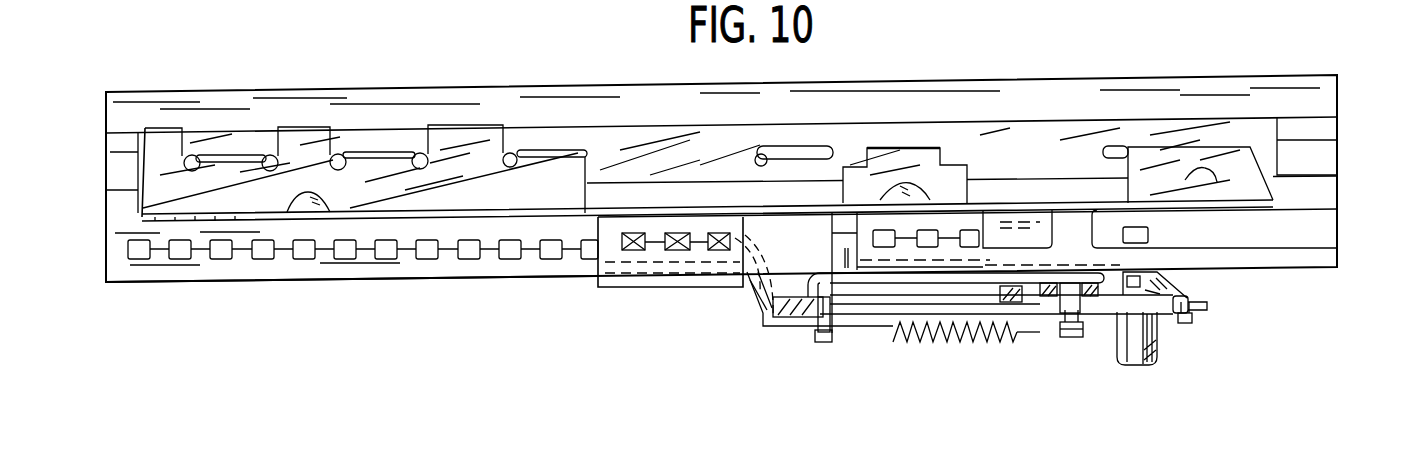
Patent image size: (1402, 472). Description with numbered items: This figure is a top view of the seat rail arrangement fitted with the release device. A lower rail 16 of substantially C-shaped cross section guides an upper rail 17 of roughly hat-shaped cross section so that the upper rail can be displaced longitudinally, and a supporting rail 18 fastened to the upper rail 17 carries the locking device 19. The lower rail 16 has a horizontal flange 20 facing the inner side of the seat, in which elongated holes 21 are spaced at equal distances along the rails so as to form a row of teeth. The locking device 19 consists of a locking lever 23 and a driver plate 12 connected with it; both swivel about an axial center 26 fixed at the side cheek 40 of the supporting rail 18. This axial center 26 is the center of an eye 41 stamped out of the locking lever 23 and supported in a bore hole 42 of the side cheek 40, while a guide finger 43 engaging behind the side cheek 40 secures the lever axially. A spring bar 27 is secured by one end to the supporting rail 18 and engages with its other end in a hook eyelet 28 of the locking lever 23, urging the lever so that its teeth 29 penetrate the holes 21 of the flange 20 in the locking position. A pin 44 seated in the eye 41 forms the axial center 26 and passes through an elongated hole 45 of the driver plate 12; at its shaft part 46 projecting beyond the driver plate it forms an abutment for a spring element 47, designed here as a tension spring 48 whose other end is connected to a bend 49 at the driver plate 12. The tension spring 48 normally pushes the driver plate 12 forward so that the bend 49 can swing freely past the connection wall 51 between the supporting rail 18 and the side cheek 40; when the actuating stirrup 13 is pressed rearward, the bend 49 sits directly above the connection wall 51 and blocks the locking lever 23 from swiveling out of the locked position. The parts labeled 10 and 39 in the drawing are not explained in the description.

The sensor carrier assembly 10 is at (721, 141).
The driver plate 12 is at (1207, 303).
The actuating stirrup 13 is at (1150, 325).
The lower rail 16 is at (208, 117).
The upper rail 17 is at (603, 160).
The supporting rail 18 is at (377, 185).
The locking device 19 is at (847, 340).
The horizontal flange 20 is at (273, 272).
The elongated holes 21 is at (472, 243).
The locking lever 23 is at (998, 302).
The axial center 26 is at (1080, 343).
The spring bar 27 is at (860, 273).
The hook eyelet 28 is at (760, 313).
The teeth 29 is at (712, 250).
The spring 39 is at (1193, 322).
The side cheek 40 is at (1105, 272).
The eye 41 is at (1042, 296).
The bore hole 42 is at (1038, 292).
The guide finger 43 is at (1160, 283).
The pin 44 is at (1058, 312).
The elongated hole 45 is at (1153, 353).
The shaft part 46 is at (1068, 337).
The spring element 47 is at (892, 332).
The tension spring 48 is at (983, 337).
The bend 49 is at (815, 337).
The connection wall 51 is at (820, 238).